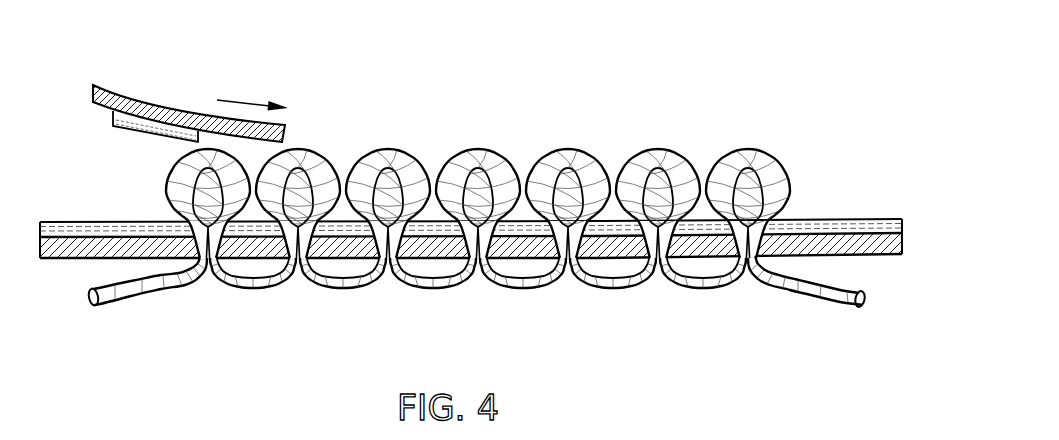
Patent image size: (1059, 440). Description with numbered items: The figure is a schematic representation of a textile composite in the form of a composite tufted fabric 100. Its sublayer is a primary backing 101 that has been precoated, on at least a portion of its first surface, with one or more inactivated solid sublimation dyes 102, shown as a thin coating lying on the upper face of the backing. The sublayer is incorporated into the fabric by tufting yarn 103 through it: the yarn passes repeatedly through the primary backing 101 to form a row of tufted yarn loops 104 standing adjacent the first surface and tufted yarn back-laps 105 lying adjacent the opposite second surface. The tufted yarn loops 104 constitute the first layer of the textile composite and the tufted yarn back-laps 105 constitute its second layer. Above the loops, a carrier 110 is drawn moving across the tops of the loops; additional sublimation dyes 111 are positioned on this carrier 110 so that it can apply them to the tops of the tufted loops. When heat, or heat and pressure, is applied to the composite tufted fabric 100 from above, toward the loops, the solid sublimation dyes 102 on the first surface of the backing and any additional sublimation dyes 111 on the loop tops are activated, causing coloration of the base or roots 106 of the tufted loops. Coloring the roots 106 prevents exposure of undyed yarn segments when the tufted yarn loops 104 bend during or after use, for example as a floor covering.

The composite tufted fabric 100 is at (814, 40).
The primary backing 101 is at (50, 258).
The solid sublimation dyes 102 is at (62, 222).
The yarn 103 is at (477, 215).
The tufted yarn loops 104 is at (478, 150).
The tufted yarn back-laps 105 is at (403, 281).
The roots of the tufted loops 106 is at (168, 219).
The carrier 110 is at (158, 106).
The additional sublimation dyes 111 is at (125, 138).